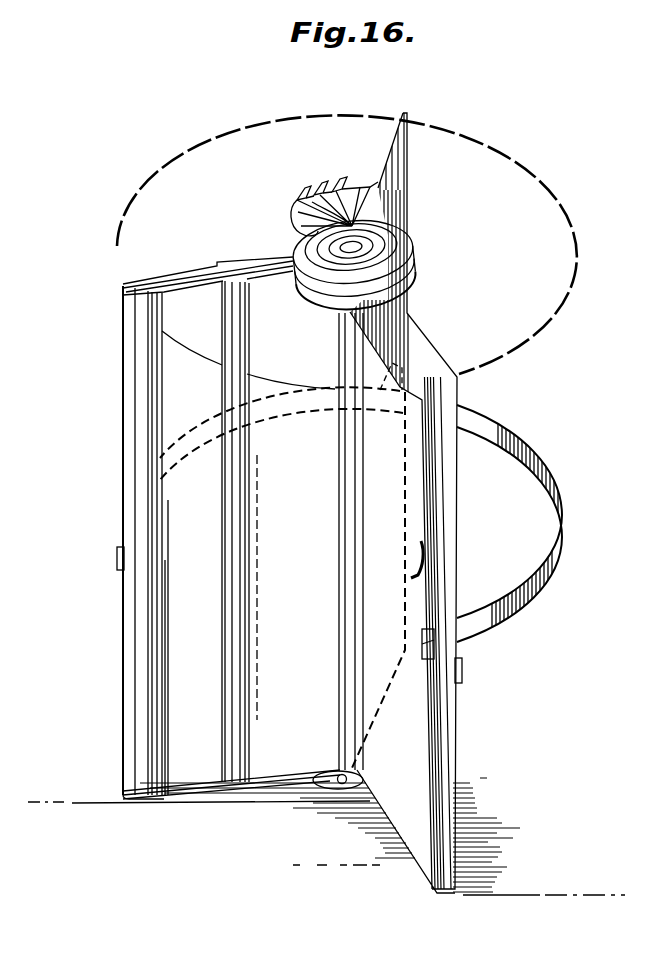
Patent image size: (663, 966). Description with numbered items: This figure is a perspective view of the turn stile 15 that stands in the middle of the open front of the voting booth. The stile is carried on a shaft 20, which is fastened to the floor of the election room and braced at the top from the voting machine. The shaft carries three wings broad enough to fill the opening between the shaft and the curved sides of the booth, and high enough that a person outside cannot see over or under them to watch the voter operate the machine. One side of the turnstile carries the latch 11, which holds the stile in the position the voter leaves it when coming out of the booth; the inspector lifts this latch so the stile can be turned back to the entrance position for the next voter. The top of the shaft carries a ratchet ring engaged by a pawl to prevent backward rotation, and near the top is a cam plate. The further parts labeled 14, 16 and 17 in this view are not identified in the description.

The latch 11 is at (410, 567).
The hub disc 14 is at (410, 243).
The turn stile 15 is at (366, 265).
The guard band 16 is at (518, 436).
The door wing 17 is at (409, 153).
The shaft 20 is at (302, 238).